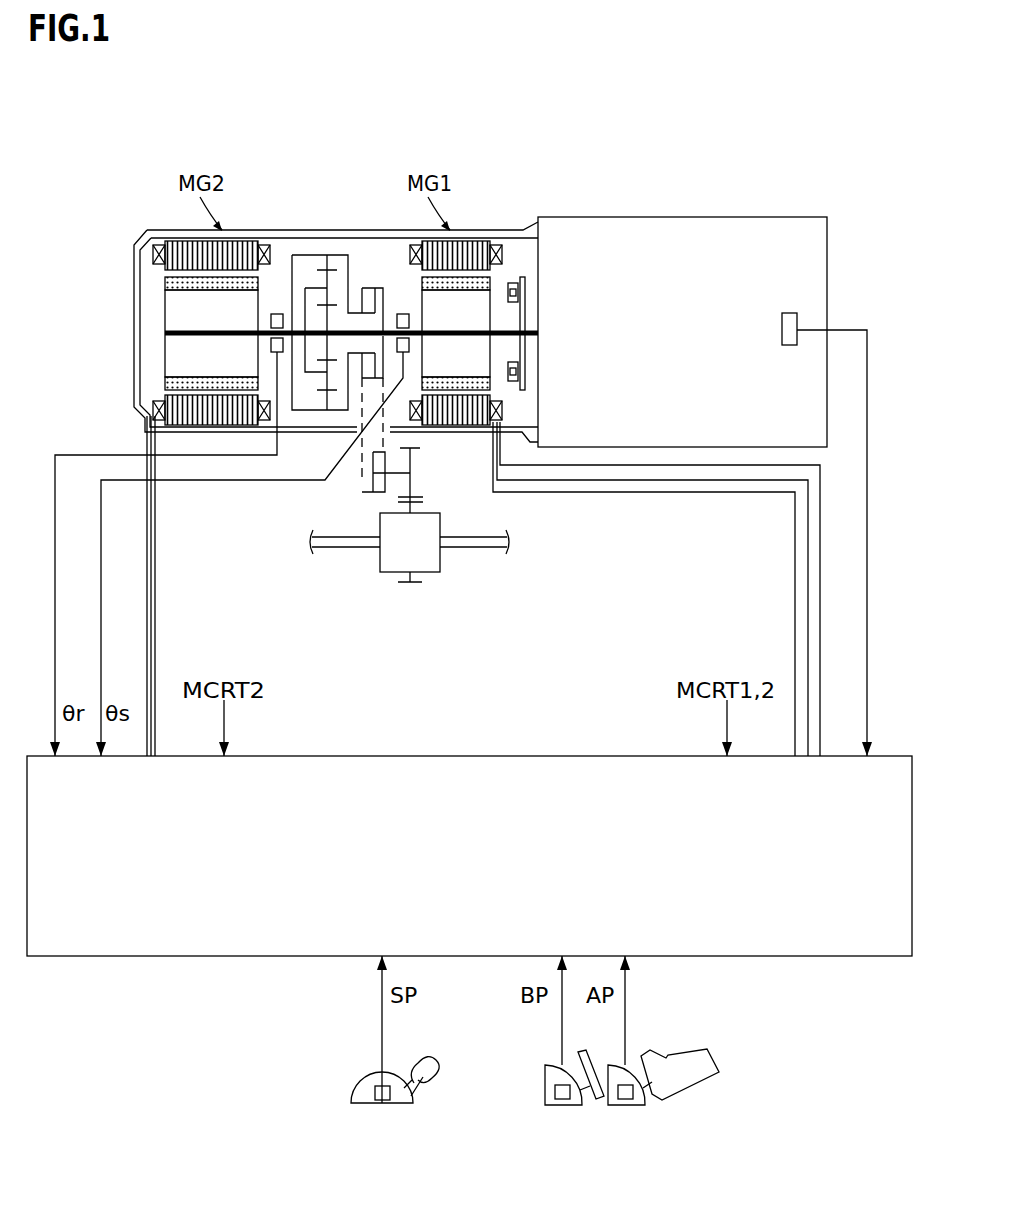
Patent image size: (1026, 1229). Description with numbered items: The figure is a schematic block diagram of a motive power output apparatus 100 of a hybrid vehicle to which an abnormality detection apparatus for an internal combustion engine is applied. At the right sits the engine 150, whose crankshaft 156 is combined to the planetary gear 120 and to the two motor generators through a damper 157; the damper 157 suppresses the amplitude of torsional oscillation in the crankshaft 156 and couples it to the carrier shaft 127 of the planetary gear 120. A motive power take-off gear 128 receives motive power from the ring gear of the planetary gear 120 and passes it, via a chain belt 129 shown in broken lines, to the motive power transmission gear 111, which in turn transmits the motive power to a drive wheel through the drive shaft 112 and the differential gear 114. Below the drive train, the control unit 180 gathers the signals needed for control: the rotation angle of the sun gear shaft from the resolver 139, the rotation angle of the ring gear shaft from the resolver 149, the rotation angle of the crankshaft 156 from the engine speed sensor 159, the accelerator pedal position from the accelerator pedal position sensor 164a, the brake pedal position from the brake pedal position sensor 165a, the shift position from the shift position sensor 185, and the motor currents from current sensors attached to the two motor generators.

The motive power output apparatus 100 is at (422, 84).
The resolver 149 is at (272, 313).
The motive power take-off gear 128 is at (365, 288).
The carrier shaft 127 is at (397, 330).
The planetary gear 120 is at (325, 228).
The resolver 139 is at (402, 313).
The damper 157 is at (510, 283).
The crankshaft 156 is at (533, 330).
The engine 150 is at (700, 216).
The engine speed sensor 159 is at (796, 313).
The chain belt 129 is at (365, 445).
The motive power transmission gear 111 is at (423, 463).
The drive shaft 112 is at (400, 475).
The differential gear 114 is at (433, 573).
The control unit 180 is at (511, 755).
The shift position sensor 185 is at (382, 1105).
The brake pedal position sensor 165a is at (562, 1107).
The accelerator pedal position sensor 164a is at (625, 1107).